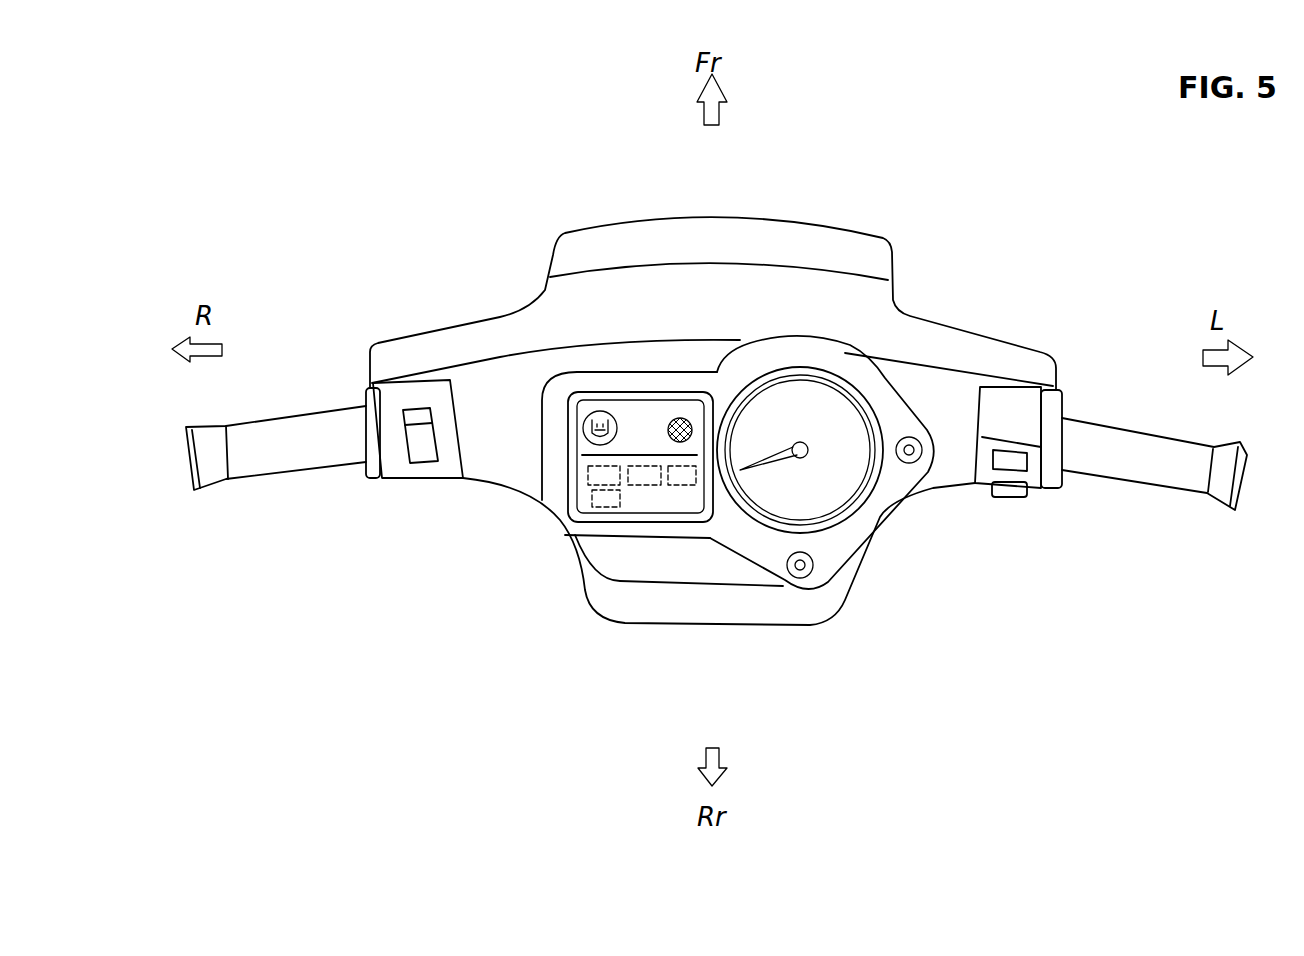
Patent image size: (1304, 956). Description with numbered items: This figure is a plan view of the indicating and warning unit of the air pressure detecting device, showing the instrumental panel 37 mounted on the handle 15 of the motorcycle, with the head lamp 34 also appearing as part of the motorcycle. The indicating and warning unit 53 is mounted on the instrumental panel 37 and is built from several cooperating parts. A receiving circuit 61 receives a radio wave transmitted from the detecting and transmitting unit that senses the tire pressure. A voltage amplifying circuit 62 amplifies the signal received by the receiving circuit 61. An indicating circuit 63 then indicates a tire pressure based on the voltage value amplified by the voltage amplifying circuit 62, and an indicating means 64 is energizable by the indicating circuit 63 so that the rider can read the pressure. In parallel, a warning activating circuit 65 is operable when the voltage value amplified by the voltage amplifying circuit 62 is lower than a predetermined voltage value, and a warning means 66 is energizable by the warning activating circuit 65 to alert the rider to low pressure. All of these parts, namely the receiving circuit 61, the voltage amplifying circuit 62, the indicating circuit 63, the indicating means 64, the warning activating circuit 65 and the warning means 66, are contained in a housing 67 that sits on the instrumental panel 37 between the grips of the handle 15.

The handle 15 is at (1090, 420).
The head lamp 34 is at (810, 222).
The instrumental panel 37 is at (888, 383).
The indicating and warning unit 53 is at (636, 383).
The receiving circuit 61 is at (587, 477).
The voltage amplifying circuit 62 is at (647, 488).
The indicating circuit 63 is at (680, 490).
The indicating means 64 is at (603, 410).
The warning activating circuit 65 is at (592, 500).
The warning means 66 is at (683, 420).
The housing 67 is at (567, 422).